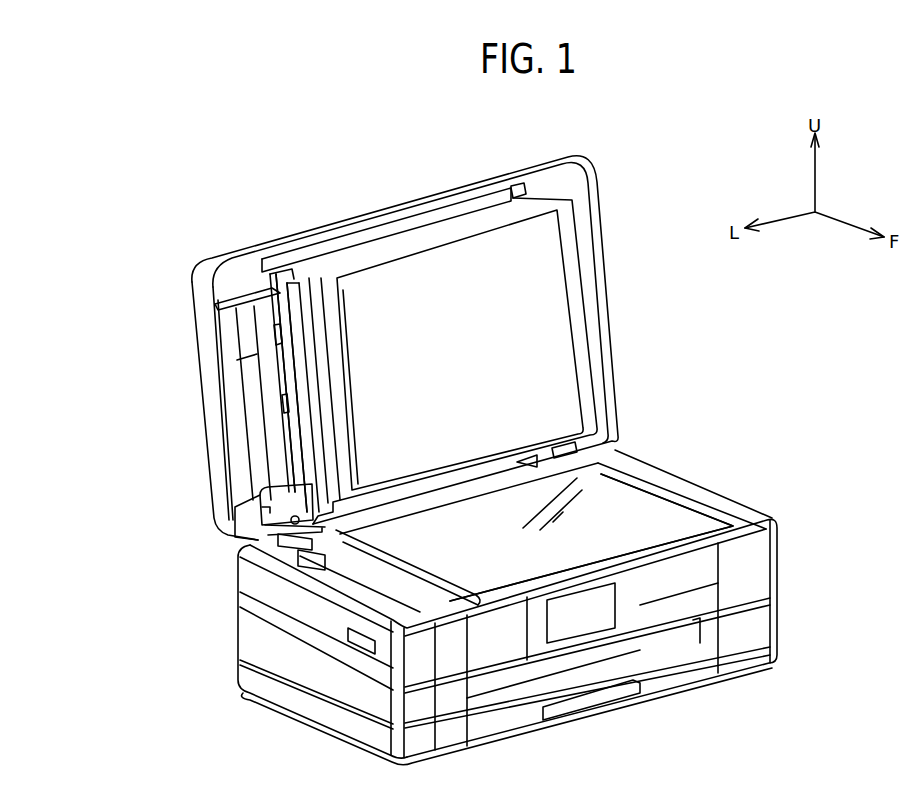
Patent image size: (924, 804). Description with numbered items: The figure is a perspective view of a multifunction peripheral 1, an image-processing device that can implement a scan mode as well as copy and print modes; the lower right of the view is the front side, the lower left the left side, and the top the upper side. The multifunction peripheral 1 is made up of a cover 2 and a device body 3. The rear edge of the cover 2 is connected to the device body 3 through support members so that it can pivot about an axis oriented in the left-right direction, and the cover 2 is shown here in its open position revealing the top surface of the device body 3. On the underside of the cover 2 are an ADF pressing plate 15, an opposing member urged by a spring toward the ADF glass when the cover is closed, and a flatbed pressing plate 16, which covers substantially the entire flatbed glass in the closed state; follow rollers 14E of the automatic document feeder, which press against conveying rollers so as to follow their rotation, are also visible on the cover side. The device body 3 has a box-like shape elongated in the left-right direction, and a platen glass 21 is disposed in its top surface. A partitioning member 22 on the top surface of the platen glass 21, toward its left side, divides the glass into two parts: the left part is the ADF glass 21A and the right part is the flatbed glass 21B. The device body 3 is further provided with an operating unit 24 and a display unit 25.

The multifunction peripheral 1 is at (138, 479).
The cover 2 is at (220, 488).
The device body 3 is at (273, 595).
The follow rollers 14E is at (273, 342).
The ADF pressing plate 15 is at (302, 312).
The flatbed pressing plate 16 is at (537, 265).
The platen glass 21 is at (621, 498).
The ADF glass 21A is at (403, 568).
The flatbed glass 21B is at (654, 508).
The partitioning member 22 is at (457, 582).
The operating unit 24 is at (655, 605).
The display unit 25 is at (570, 618).